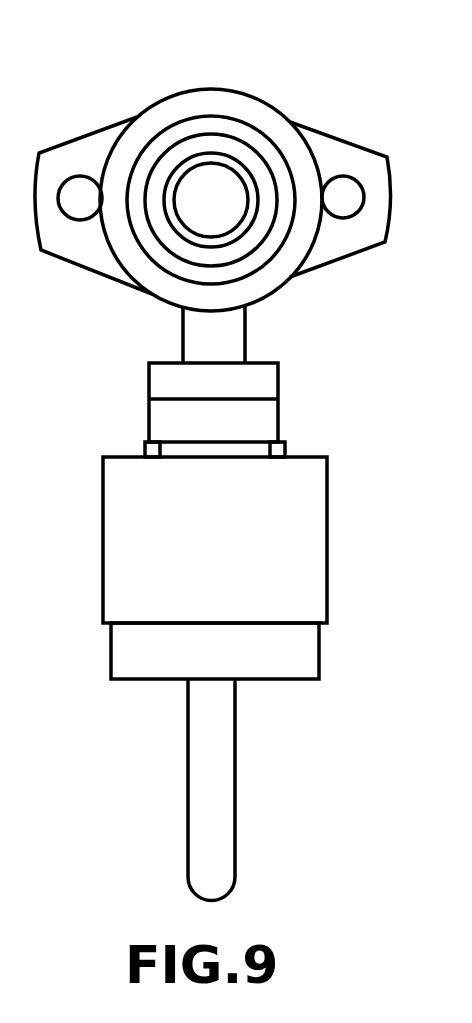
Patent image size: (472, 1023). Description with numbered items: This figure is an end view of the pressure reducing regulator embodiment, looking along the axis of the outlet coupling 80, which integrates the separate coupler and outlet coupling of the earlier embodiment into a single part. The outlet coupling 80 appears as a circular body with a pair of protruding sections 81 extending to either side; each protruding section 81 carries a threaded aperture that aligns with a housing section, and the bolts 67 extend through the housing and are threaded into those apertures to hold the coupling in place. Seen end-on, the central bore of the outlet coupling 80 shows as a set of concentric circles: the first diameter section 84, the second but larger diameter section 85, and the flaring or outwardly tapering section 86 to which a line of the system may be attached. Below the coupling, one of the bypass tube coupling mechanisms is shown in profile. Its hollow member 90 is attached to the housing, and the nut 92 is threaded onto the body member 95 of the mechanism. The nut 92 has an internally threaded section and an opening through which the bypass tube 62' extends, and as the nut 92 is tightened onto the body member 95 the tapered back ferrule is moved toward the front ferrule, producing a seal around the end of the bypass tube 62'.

The outlet coupling 80 is at (211, 172).
The protruding sections 81 is at (230, 188).
The second diameter section 85 is at (258, 153).
The first diameter section 84 is at (270, 235).
The flaring section 86 is at (193, 229).
The bolts 67 is at (233, 225).
The hollow member 90 is at (268, 334).
The body member 95 is at (259, 410).
The nut 92 is at (249, 568).
The bypass tube 62' is at (175, 790).